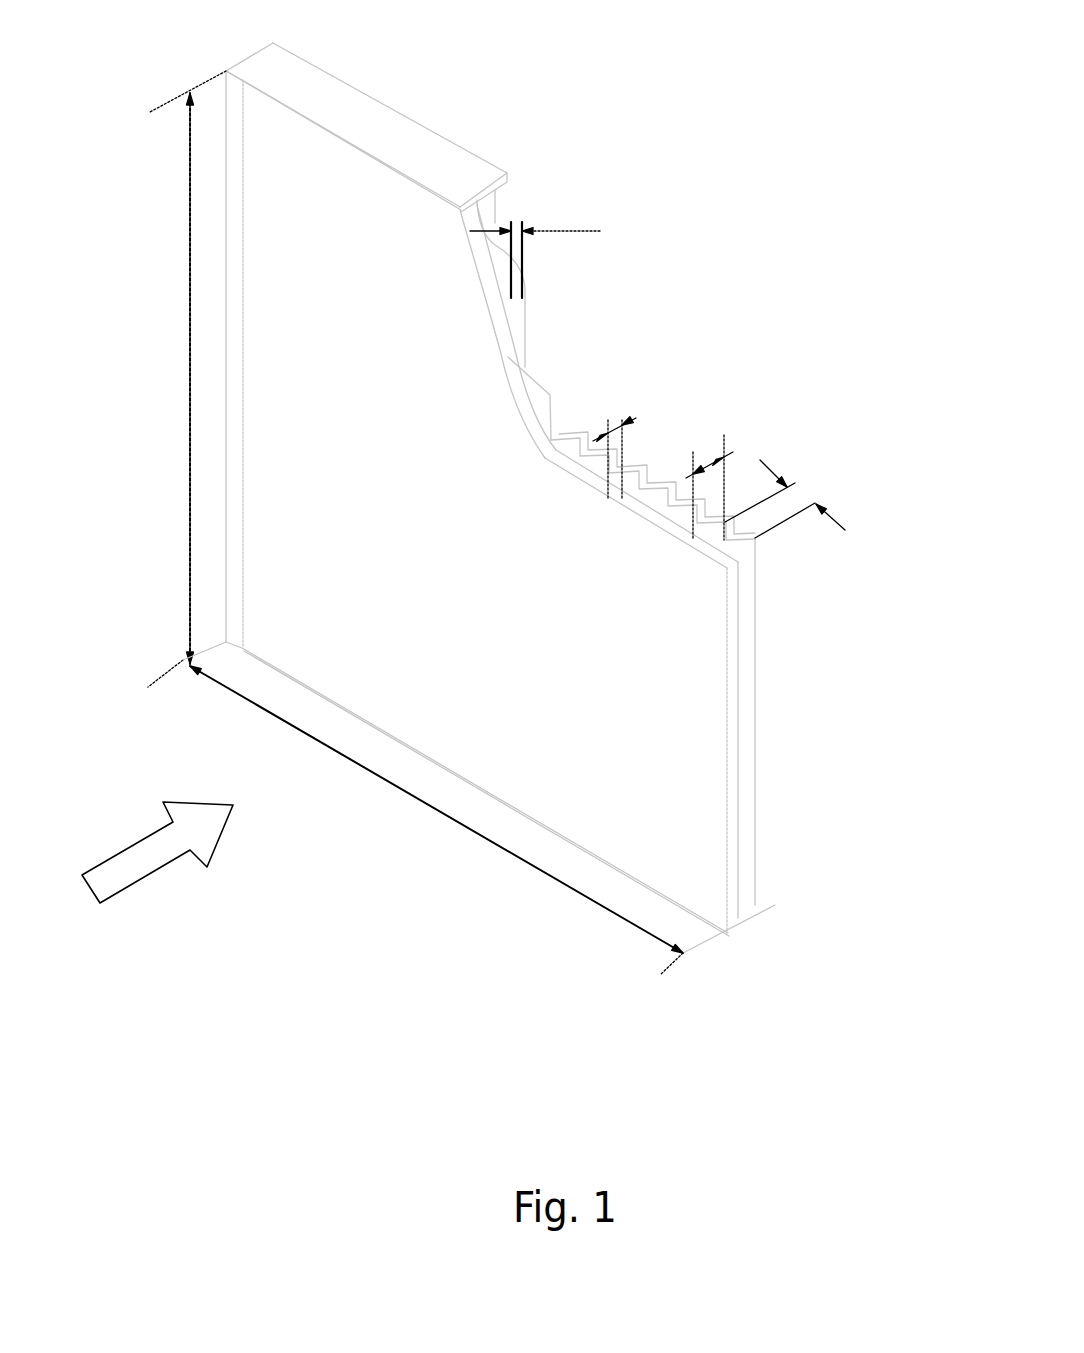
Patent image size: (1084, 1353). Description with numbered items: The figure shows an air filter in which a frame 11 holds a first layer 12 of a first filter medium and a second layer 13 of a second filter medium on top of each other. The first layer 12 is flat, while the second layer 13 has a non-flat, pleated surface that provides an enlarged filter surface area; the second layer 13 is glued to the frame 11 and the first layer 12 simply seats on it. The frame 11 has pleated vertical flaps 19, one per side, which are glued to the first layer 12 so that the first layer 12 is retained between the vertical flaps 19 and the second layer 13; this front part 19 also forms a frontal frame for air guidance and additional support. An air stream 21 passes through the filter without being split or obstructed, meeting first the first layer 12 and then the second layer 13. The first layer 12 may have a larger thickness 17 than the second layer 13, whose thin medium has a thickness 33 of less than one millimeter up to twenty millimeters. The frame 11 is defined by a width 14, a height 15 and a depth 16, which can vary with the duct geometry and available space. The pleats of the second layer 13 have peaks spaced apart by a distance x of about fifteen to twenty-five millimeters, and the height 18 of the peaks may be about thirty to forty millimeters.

The frame 11 is at (410, 146).
The first layer 12 is at (688, 723).
The second layer 13 is at (550, 396).
The width 14 is at (415, 800).
The height 15 is at (187, 413).
The depth 16 is at (335, 116).
The thickness 17 is at (611, 420).
The height of the peaks 18 is at (707, 455).
The vertical flaps 19 is at (233, 107).
The air stream 21 is at (157, 867).
The thickness 33 is at (535, 235).
The distance x is at (797, 499).